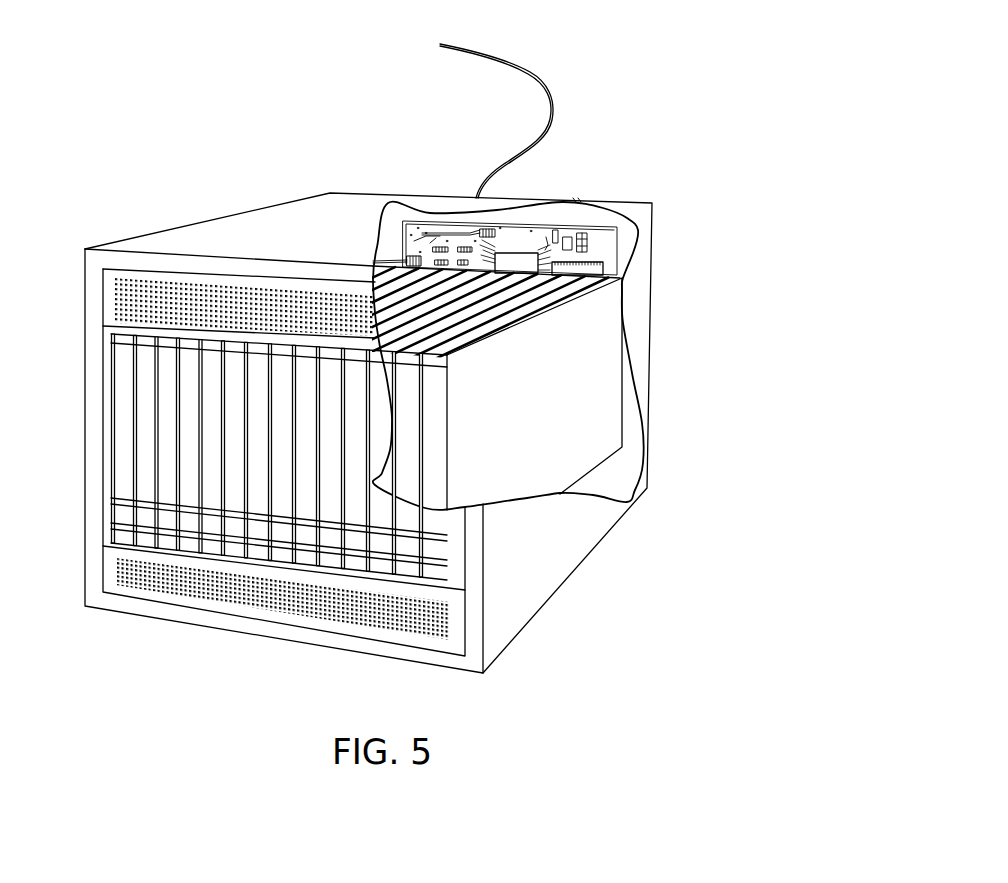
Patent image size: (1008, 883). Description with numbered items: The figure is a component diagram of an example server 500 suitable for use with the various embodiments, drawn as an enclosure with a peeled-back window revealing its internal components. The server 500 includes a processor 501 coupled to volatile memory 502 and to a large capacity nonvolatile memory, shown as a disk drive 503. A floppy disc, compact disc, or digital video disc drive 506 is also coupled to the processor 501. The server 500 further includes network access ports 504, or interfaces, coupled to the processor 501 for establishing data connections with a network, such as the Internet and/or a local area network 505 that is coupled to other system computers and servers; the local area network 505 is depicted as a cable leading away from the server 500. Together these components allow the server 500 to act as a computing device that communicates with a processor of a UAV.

The server 500 is at (258, 210).
The processor 501 is at (518, 265).
The volatile memory 502 is at (597, 270).
The disk drive 503 is at (167, 397).
The network access ports 504 is at (142, 430).
The local area network 505 is at (553, 101).
The compact disc (CD) or digital video disc (DVD) drive 506 is at (404, 259).